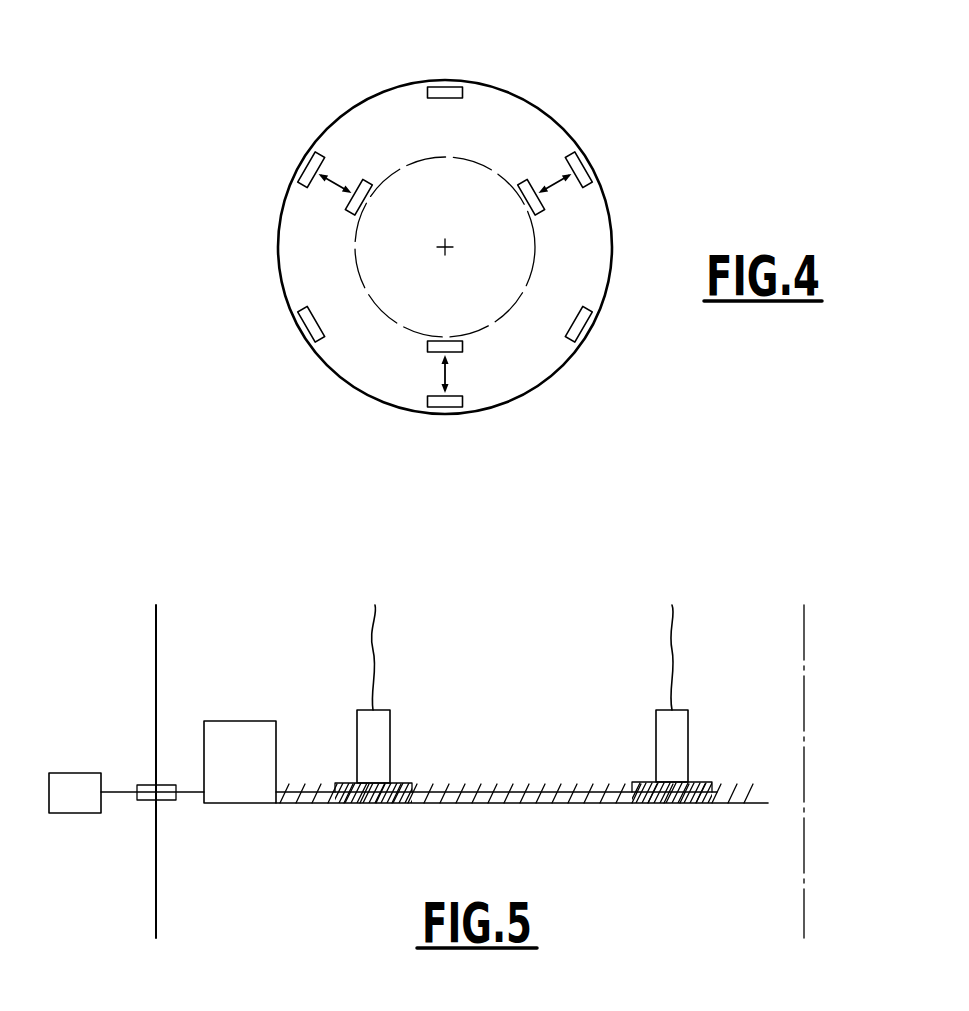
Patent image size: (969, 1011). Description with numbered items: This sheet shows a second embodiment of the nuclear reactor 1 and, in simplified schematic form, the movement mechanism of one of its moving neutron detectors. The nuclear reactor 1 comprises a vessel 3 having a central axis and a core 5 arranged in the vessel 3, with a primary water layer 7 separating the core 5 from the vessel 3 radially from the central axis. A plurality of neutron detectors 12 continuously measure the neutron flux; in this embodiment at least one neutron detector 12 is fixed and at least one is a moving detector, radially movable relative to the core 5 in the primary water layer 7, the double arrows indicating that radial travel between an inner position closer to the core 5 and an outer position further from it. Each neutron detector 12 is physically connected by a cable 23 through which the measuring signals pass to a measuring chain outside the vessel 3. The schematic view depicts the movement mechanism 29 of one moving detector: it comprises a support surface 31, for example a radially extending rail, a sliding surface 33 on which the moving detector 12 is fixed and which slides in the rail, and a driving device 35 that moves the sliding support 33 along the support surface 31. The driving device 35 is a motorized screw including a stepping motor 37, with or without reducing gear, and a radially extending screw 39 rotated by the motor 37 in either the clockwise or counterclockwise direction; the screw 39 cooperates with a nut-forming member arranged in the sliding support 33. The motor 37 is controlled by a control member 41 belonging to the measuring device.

In FIG. 4, the nuclear reactor 1 is at (318, 100).
In FIG. 4, the vessel 3 is at (612, 277).
In FIG. 5, the vessel 3 is at (156, 865).
In FIG. 4, the core 5 is at (482, 170).
In FIG. 5, the core 5 is at (833, 771).
In FIG. 4, the primary water layer 7 is at (308, 277).
In FIG. 5, the primary water layer 7 is at (522, 829).
In FIG. 4, the neutron detector 12 is at (445, 88).
In FIG. 5, the neutron detector 12 is at (375, 738).
In FIG. 5, the cable 23 is at (373, 648).
In FIG. 5, the movement mechanism 29 is at (318, 696).
In FIG. 5, the support surface 31 is at (615, 803).
In FIG. 5, the sliding surface 33 is at (705, 781).
In FIG. 5, the driving device 35 is at (308, 815).
In FIG. 5, the stepping motor 37 is at (245, 725).
In FIG. 5, the screw 39 is at (548, 792).
In FIG. 5, the control member 41 is at (88, 773).